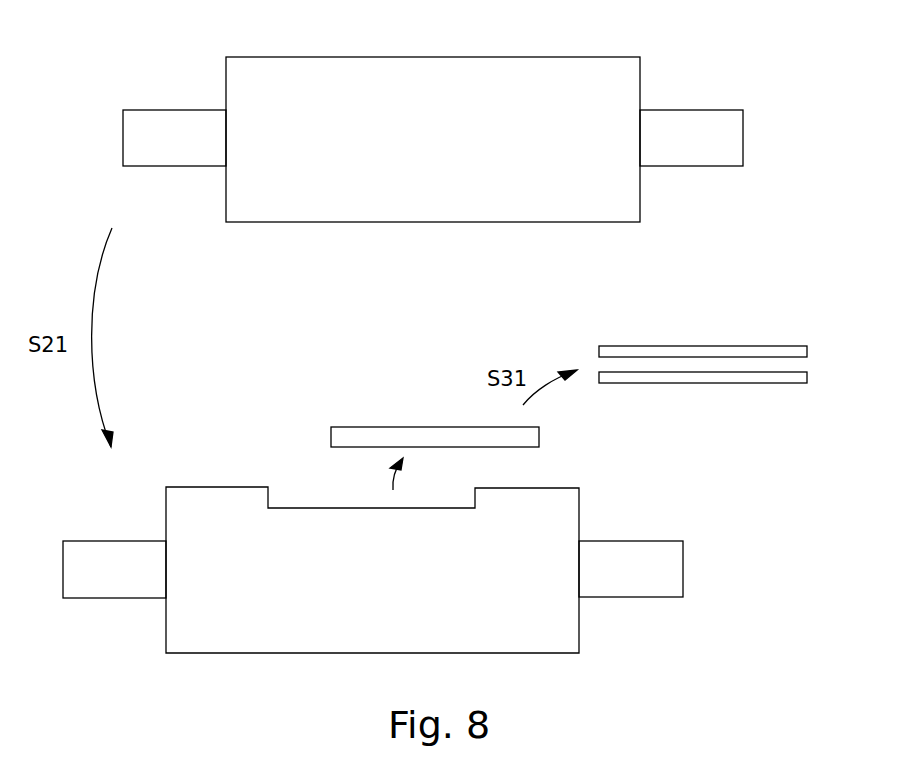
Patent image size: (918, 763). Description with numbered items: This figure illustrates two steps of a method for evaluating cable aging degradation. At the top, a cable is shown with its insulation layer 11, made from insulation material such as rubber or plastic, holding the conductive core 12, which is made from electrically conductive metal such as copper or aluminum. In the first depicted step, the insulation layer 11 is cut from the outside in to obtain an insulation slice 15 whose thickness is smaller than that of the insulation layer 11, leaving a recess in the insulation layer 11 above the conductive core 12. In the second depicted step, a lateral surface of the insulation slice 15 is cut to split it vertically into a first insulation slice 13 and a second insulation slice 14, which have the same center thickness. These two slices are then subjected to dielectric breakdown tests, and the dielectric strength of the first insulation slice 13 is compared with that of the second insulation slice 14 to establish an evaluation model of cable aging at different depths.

The insulation layer 11 is at (607, 65).
The conductive core 12 is at (697, 123).
The first insulation slice 13 is at (750, 352).
The second insulation slice 14 is at (689, 378).
The insulation slice 15 is at (360, 435).